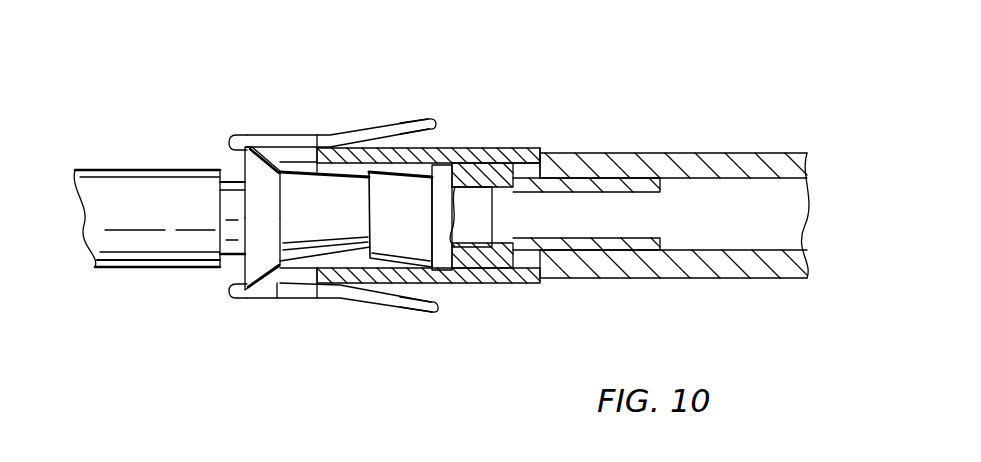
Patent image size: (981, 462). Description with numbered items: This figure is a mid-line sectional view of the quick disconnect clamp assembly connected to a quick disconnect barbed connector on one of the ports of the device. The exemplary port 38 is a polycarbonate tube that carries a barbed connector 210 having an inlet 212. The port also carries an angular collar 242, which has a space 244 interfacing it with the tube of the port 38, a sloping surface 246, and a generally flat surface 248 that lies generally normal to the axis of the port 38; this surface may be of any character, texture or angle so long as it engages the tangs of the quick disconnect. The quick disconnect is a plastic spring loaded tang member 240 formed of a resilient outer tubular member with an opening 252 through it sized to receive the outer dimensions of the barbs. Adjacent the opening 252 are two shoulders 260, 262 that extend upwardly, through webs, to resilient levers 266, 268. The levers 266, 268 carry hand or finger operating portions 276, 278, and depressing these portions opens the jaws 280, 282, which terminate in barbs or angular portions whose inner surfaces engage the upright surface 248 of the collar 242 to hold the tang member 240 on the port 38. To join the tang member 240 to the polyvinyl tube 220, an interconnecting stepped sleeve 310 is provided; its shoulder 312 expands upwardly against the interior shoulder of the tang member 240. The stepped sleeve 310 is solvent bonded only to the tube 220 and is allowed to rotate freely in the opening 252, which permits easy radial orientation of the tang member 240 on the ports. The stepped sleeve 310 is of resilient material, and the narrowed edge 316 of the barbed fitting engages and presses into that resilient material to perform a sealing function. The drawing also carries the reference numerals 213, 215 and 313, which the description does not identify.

The port 38 is at (105, 170).
The angular collar 242 is at (221, 190).
The space 244 is at (235, 251).
The sloping surface 246 is at (277, 300).
The flat surface 248 is at (243, 149).
The jaw 280 is at (272, 135).
The jaw 282 is at (260, 294).
The resilient lever 266 is at (336, 138).
The resilient lever 268 is at (330, 299).
The hand or finger operating portion 276 is at (428, 122).
The hand or finger operating portion 278 is at (398, 308).
The shoulder 260 is at (298, 148).
The shoulder 262 is at (273, 299).
The opening 252 is at (355, 167).
The inlet 212 is at (487, 283).
The housing lower inner wall 313 is at (535, 283).
The narrowed edge 316 is at (500, 186).
The clamp body 215 is at (369, 216).
The collet 213 is at (431, 207).
The interconnecting stepped sleeve 310 is at (642, 178).
The polyvinyl (PVC) tube 220 is at (777, 153).
The shoulder 312 is at (550, 152).
The barbed connector 210 is at (407, 205).
The spring loaded tang member 240 is at (482, 138).